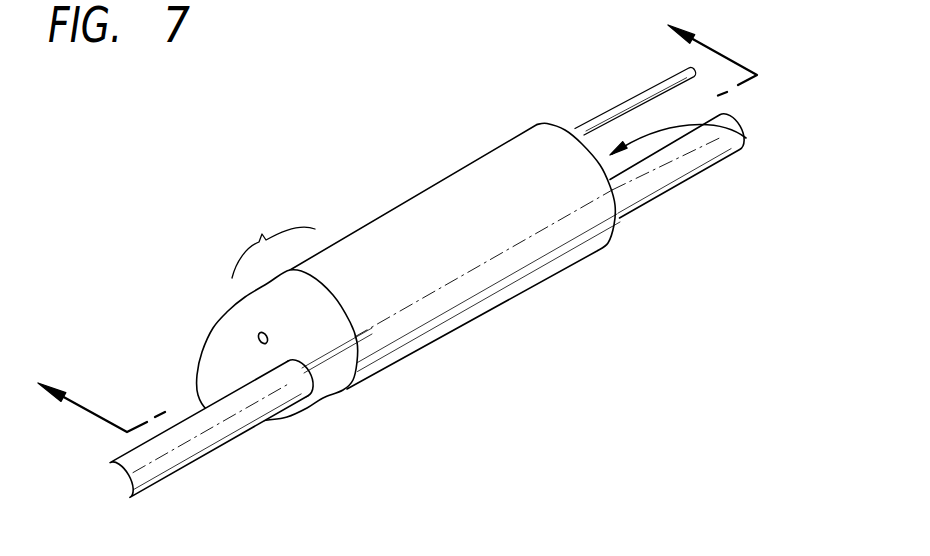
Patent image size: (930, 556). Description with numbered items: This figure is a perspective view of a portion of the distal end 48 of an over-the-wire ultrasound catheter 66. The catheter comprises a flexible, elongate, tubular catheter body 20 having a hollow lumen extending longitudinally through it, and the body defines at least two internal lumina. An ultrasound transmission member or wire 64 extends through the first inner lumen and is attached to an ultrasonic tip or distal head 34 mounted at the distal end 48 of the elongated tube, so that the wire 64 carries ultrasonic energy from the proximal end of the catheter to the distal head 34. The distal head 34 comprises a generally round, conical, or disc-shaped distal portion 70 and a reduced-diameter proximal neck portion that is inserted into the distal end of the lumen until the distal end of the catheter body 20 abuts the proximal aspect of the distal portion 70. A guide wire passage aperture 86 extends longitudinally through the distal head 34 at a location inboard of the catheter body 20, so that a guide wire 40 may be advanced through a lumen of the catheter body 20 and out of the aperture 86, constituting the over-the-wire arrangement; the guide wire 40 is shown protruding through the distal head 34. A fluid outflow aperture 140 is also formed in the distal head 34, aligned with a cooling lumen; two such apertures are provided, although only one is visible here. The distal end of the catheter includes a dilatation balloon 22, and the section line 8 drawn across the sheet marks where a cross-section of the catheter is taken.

The section line 8- 8 is at (383, 217).
The catheter body 20 is at (503, 167).
The dilatation balloon 22 is at (735, 131).
The distal head 34 is at (227, 336).
The guide wire 40 is at (425, 319).
The distal end 48 is at (347, 231).
The ultrasound transmission member 64 is at (630, 99).
The over-the-wire ultrasound catheter 66 is at (269, 114).
The distal portion 70 is at (273, 241).
The guide wire passage aperture 86 is at (314, 389).
The fluid outflow aperture 140 is at (268, 338).